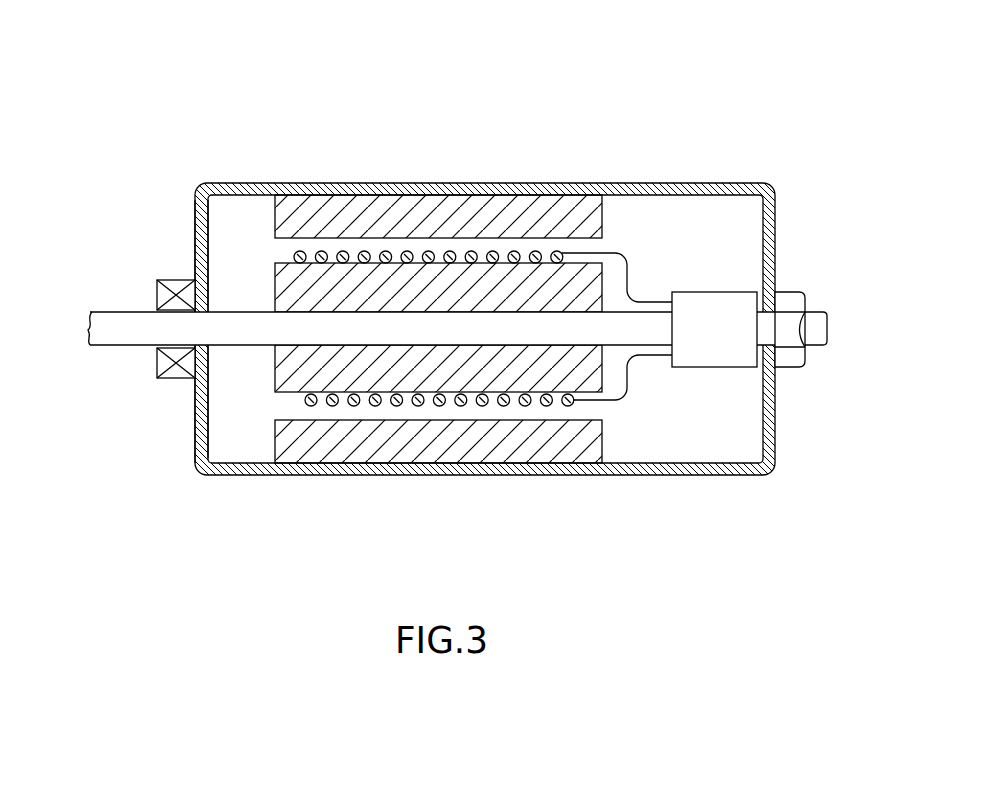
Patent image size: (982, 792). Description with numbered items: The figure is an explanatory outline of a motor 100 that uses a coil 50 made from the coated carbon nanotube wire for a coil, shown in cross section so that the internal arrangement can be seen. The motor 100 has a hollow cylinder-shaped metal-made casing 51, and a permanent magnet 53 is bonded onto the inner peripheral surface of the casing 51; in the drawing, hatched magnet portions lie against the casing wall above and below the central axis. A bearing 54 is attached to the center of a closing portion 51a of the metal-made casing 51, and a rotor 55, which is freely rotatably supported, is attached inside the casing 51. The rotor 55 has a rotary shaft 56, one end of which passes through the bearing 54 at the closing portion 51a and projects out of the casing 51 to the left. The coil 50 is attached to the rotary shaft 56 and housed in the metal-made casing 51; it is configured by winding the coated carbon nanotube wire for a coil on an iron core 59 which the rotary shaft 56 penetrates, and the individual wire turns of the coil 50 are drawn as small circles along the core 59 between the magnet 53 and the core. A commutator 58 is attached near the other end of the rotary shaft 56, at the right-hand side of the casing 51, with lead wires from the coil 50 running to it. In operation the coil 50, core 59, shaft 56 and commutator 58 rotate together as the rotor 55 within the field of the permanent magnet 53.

The motor 100 is at (435, 293).
The coil 50 is at (473, 333).
The metal-made casing 51 is at (667, 183).
The closing portion 51a is at (195, 433).
The permanent magnet 53 is at (458, 183).
The bearing 54 is at (157, 363).
The rotor 55 is at (405, 412).
The rotary shaft 56 is at (112, 348).
The commutator 58 is at (723, 292).
The iron core 59 is at (332, 372).